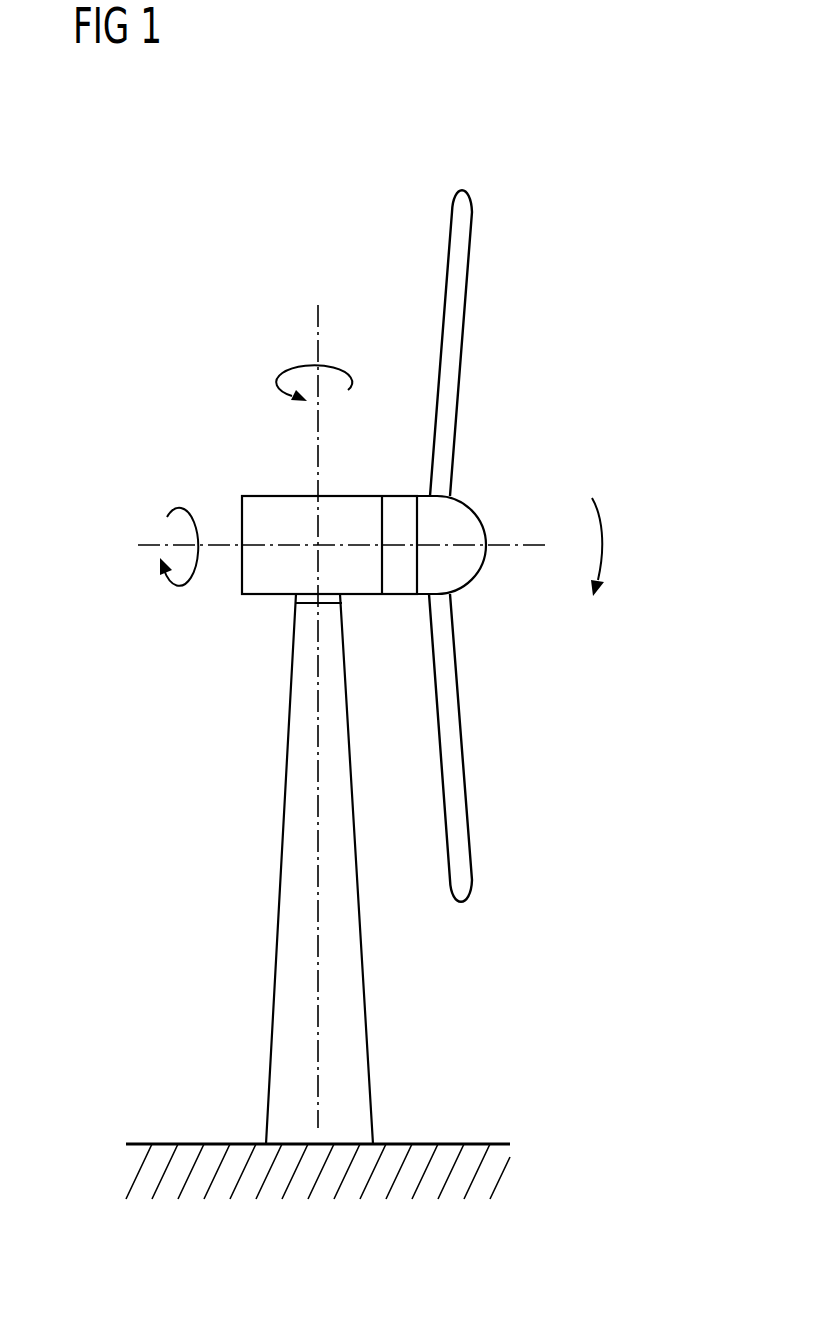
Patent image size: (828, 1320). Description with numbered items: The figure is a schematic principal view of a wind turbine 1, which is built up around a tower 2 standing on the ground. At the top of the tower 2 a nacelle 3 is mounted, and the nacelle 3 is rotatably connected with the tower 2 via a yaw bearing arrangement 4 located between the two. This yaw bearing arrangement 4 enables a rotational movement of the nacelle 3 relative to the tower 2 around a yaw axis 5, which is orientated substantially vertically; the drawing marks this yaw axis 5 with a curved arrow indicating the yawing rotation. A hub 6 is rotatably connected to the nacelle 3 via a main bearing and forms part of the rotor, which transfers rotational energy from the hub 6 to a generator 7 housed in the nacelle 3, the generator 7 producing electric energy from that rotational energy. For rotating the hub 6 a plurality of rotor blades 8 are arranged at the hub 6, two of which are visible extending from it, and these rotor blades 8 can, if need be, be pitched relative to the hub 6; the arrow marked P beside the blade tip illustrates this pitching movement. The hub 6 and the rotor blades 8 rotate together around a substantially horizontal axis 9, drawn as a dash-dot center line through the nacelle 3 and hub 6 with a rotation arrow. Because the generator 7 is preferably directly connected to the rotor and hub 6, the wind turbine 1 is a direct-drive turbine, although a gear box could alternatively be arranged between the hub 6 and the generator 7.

The wind turbine 1 is at (166, 220).
The tower 2 is at (365, 1015).
The nacelle 3 is at (278, 496).
The yaw bearing arrangement 4 is at (296, 599).
The yaw axis 5 is at (316, 316).
The hub 6 is at (489, 511).
The generator 7 is at (399, 580).
The rotor blades 8 is at (469, 332).
The horizontal axis 9 is at (150, 540).
The pitch direction P is at (603, 538).